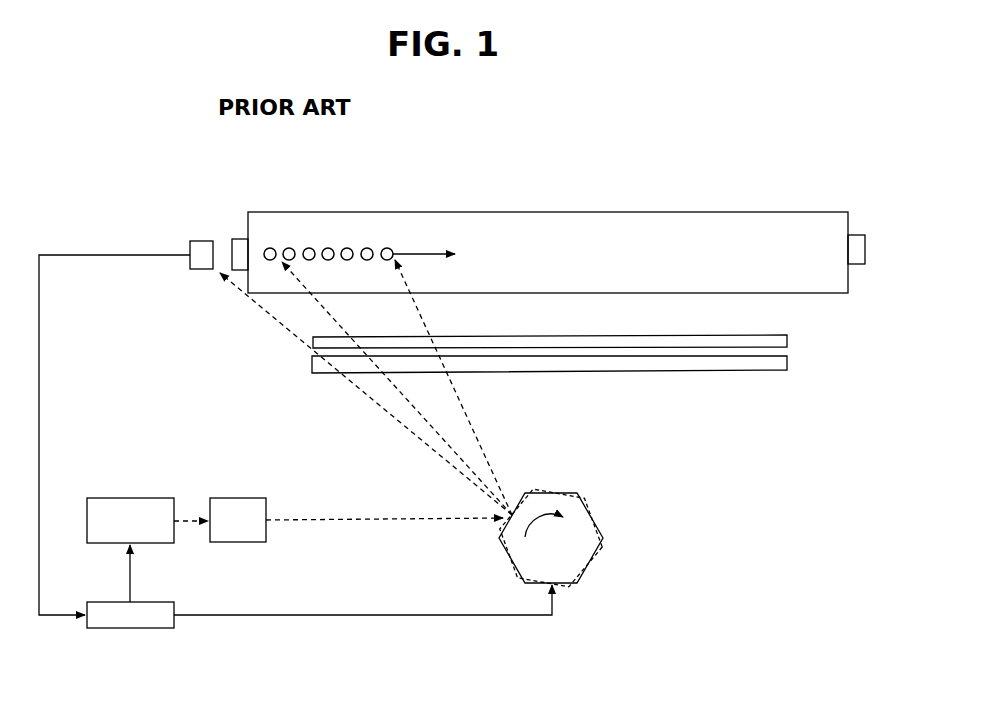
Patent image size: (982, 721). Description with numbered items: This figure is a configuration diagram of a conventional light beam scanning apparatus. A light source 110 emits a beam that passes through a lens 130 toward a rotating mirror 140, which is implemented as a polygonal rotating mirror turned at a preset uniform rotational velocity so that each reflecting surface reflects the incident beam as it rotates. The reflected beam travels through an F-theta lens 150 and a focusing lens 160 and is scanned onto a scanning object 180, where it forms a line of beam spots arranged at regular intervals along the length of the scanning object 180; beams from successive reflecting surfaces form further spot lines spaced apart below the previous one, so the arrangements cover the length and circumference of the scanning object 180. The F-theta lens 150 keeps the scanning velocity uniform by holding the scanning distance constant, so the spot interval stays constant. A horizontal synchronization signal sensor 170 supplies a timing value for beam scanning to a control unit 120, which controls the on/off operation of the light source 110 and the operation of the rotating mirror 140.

The light source 110 is at (128, 498).
The control unit 120 is at (130, 628).
The lens 130 is at (238, 498).
The rotating mirror 140 is at (565, 494).
The F-theta lens 150 is at (789, 362).
The focusing lens 160 is at (789, 341).
The horizontal synchronization signal sensor 170 is at (206, 241).
The scanning object 180 is at (586, 212).